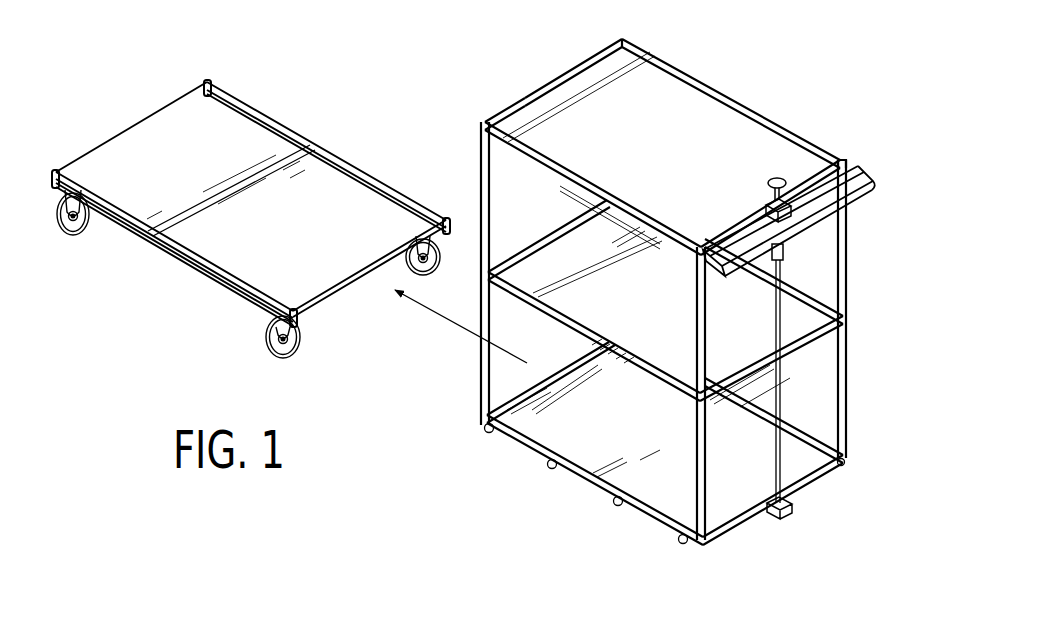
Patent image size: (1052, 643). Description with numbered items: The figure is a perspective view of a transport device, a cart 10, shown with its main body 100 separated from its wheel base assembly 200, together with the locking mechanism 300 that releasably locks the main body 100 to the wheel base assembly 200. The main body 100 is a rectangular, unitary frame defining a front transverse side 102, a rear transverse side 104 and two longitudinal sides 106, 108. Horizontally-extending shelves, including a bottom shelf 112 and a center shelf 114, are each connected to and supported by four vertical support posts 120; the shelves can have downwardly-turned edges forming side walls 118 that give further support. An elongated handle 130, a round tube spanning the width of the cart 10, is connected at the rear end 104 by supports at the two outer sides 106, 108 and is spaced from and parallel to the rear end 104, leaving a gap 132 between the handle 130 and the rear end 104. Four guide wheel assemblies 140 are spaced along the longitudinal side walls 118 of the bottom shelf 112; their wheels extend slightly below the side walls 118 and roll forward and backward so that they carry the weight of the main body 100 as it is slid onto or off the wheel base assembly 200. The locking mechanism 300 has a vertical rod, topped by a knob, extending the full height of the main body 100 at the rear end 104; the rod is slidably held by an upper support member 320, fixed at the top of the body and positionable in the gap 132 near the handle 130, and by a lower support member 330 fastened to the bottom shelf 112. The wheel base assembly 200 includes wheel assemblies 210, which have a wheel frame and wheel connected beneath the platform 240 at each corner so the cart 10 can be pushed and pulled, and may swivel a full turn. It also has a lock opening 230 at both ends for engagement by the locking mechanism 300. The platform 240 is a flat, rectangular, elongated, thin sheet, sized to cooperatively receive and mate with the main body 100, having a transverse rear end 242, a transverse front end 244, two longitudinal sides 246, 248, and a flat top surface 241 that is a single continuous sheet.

The cart 10 is at (791, 52).
The main body 100 is at (449, 443).
The front transverse side 102 is at (527, 88).
The rear transverse side 104 is at (843, 158).
The longitudinal side 106 is at (726, 50).
The longitudinal side 108 is at (475, 134).
The bottom shelf 112 is at (618, 481).
The center shelf 114 is at (665, 299).
The side wall 118 is at (588, 153).
The vertical support post 120 is at (846, 304).
The handle 130 is at (857, 202).
The gap 132 is at (882, 153).
The guide wheel assembly 140 is at (546, 464).
The locking mechanism 300 is at (762, 196).
The upper support member 320 is at (766, 209).
The lower support member 330 is at (790, 505).
The wheel base assembly 200 is at (128, 313).
The wheel assembly 210 is at (74, 236).
The lock opening 230 is at (133, 139).
The platform 240 is at (152, 117).
The flat top surface 241 is at (231, 159).
The transverse rear end 242 is at (327, 305).
The transverse front end 244 is at (93, 134).
The longitudinal side 246 is at (213, 275).
The longitudinal side 248 is at (300, 116).